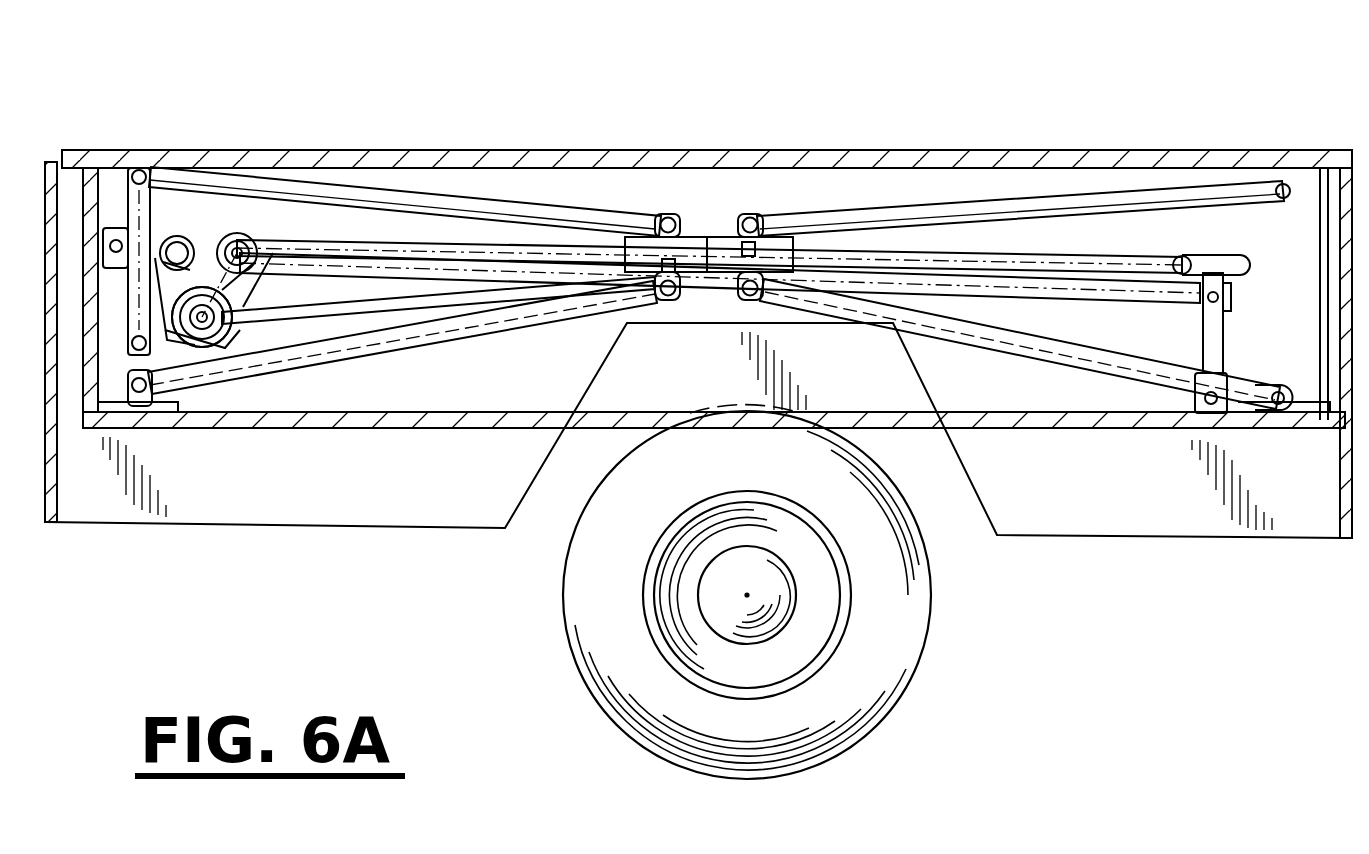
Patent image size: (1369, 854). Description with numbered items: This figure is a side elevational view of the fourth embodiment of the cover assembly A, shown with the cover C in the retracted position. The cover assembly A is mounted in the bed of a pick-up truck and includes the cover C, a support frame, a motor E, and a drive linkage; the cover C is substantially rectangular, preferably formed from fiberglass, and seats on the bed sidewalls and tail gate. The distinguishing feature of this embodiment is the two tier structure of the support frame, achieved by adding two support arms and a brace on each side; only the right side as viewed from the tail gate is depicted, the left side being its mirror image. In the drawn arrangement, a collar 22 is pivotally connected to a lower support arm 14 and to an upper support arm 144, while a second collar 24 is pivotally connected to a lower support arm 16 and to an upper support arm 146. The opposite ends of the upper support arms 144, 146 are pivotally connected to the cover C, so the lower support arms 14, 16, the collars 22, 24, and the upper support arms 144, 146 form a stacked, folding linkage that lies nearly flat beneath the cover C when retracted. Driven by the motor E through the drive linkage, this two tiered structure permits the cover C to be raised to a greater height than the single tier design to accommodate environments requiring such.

The upper support arm 144 is at (334, 192).
The upper support arm 146 is at (1115, 205).
The collar 22 is at (640, 237).
The collar 24 is at (790, 237).
The lower support arm 14 is at (340, 340).
The lower support arm 16 is at (1083, 352).
The cover C is at (430, 125).
The cover assembly A is at (760, 100).
The motor E is at (210, 368).